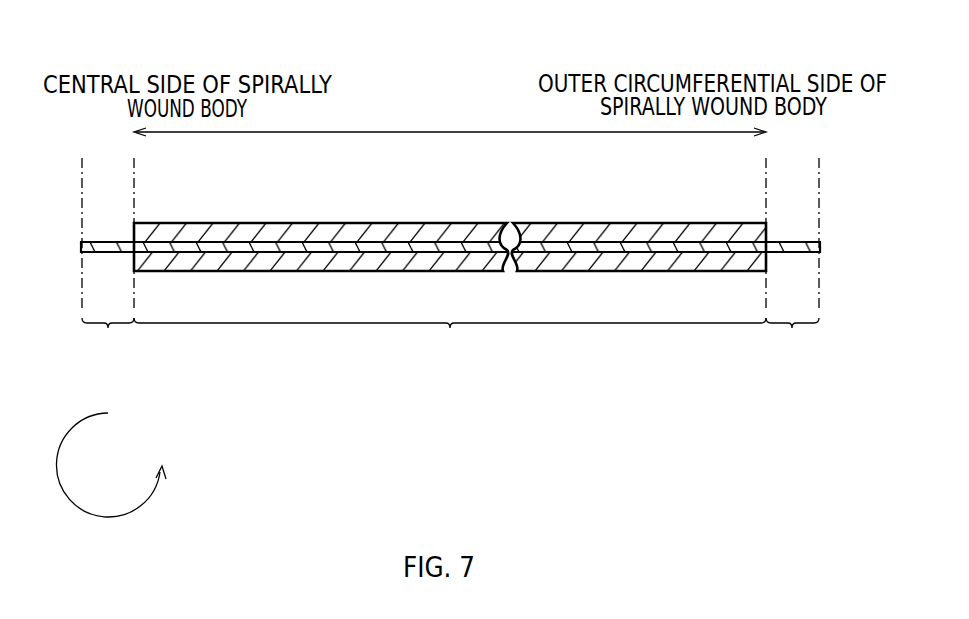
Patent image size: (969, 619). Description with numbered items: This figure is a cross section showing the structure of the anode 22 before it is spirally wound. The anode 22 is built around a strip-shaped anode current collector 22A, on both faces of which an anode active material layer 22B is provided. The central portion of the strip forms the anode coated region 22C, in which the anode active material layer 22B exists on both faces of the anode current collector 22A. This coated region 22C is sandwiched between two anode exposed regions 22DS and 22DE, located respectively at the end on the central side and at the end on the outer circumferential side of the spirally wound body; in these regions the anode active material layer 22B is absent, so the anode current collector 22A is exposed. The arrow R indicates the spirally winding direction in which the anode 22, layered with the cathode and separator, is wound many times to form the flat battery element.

The anode 22 is at (450, 194).
The anode current collector 22A is at (422, 248).
The anode active material layer 22B is at (554, 258).
The anode coated region 22C is at (450, 258).
The anode exposed region 22DS is at (108, 259).
The anode exposed region 22DE is at (792, 259).
The spirally winding direction R is at (153, 497).